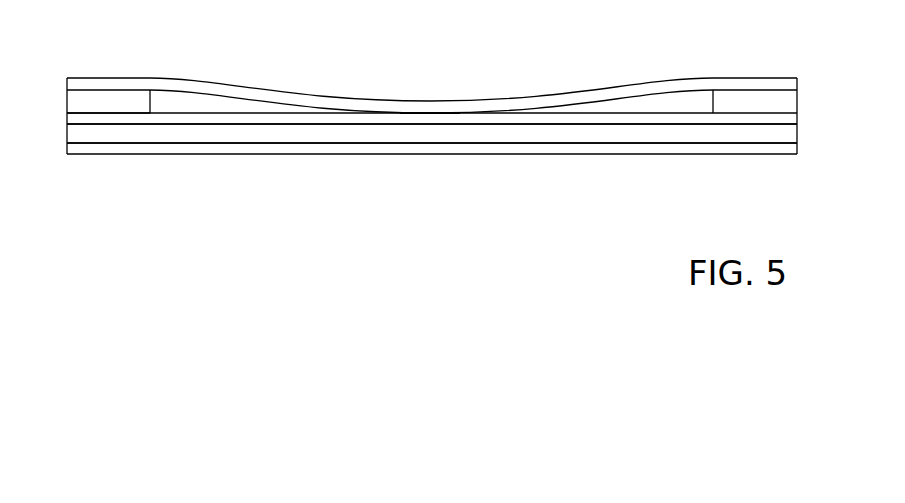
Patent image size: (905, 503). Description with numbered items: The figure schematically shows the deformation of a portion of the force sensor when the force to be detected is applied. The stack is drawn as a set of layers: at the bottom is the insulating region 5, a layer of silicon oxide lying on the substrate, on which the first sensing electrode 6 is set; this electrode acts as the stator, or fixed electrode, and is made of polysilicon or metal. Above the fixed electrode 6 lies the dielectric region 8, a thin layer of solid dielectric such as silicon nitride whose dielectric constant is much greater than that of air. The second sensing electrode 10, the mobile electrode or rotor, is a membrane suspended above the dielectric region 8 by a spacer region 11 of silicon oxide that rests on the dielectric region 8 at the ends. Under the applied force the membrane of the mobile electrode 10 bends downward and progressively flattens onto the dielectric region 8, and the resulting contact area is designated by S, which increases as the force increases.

The insulating region 5 is at (774, 147).
The first sensing electrode 6 is at (790, 133).
The dielectric region 8 is at (801, 118).
The second sensing electrode 10 is at (203, 88).
The spacer region 11 is at (73, 104).
The contact area S is at (423, 117).